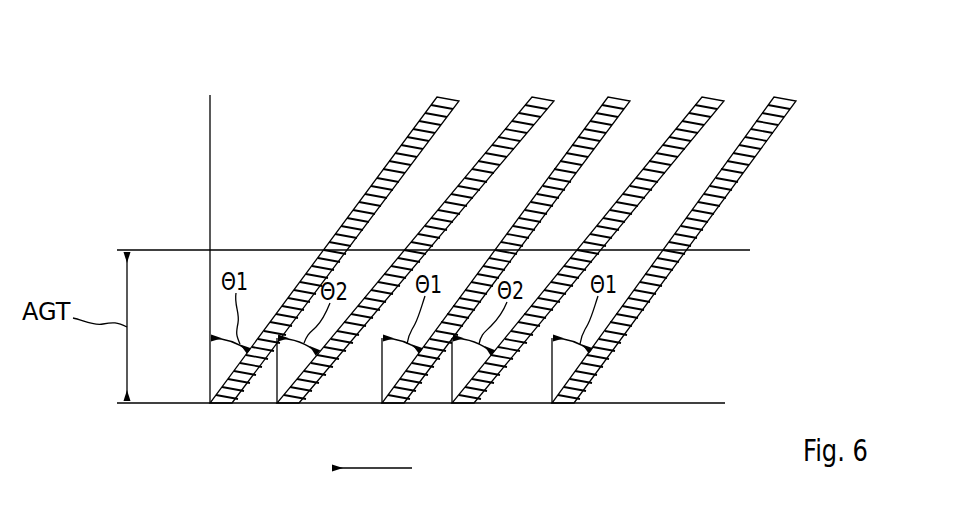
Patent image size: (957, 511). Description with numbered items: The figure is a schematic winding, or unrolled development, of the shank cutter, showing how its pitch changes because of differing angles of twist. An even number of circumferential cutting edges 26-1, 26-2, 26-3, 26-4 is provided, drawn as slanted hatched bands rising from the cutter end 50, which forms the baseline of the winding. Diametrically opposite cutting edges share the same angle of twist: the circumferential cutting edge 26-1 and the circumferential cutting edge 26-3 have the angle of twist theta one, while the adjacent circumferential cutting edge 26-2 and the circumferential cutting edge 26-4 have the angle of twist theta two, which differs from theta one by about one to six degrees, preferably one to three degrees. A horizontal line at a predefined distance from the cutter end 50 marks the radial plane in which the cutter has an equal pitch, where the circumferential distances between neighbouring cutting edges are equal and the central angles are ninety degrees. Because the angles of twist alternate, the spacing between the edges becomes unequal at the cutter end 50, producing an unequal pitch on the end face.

The circumferential cutting edge 26-1 is at (413, 130).
The circumferential cutting edge 26-2 is at (504, 128).
The circumferential cutting edge 26-3 is at (574, 144).
The circumferential cutting edge 26-4 is at (675, 126).
The cutter end 50 is at (518, 404).